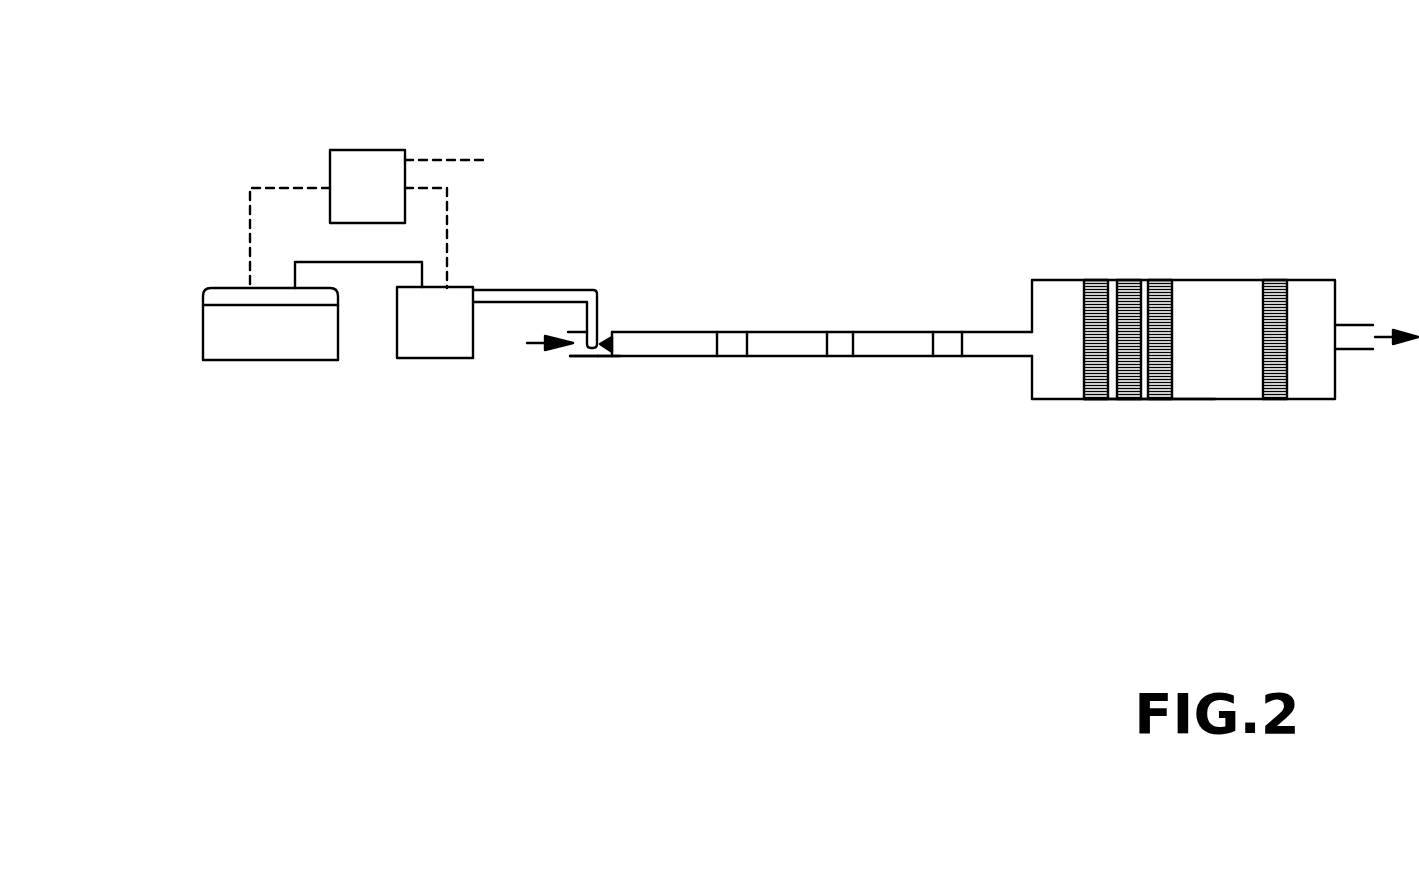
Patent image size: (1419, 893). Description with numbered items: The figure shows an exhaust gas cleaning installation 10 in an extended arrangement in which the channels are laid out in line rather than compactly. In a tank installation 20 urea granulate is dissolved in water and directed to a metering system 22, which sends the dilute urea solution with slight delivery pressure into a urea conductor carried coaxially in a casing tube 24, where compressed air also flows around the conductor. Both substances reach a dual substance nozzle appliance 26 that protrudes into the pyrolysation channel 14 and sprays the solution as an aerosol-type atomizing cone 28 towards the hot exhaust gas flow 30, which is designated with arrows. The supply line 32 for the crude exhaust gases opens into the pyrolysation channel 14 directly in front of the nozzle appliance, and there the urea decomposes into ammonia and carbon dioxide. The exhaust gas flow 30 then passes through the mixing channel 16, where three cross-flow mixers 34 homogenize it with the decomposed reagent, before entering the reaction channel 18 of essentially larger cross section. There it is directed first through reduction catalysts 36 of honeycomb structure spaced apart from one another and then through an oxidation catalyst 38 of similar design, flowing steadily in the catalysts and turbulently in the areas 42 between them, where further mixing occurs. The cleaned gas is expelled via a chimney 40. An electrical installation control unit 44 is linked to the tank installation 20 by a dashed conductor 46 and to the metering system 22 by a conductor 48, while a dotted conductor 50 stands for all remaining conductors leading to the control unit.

The exhaust gas cleaning installation 10 is at (207, 562).
The pyrolysation channel 14 is at (672, 348).
The mixing channel 16 is at (787, 348).
The reaction channel 18 is at (1048, 293).
The tank installation 20 is at (264, 352).
The metering system 22 is at (436, 348).
The casing tube 24 is at (566, 290).
The dual substance nozzle appliance 26 is at (598, 312).
The atomizing cone 28 is at (610, 356).
The exhaust gas flow 30 is at (527, 346).
The supply line 32 is at (582, 358).
The cross-flow mixers 34 is at (734, 330).
The reduction catalysts 36 is at (1160, 282).
The oxidation catalyst 38 is at (1277, 282).
The chimney 40 is at (1357, 323).
The areas between the catalysts 42 is at (1213, 399).
The electrical installation control unit 44 is at (353, 160).
The conductor 46 is at (268, 188).
The conductor 48 is at (447, 228).
The conductor 50 is at (447, 160).